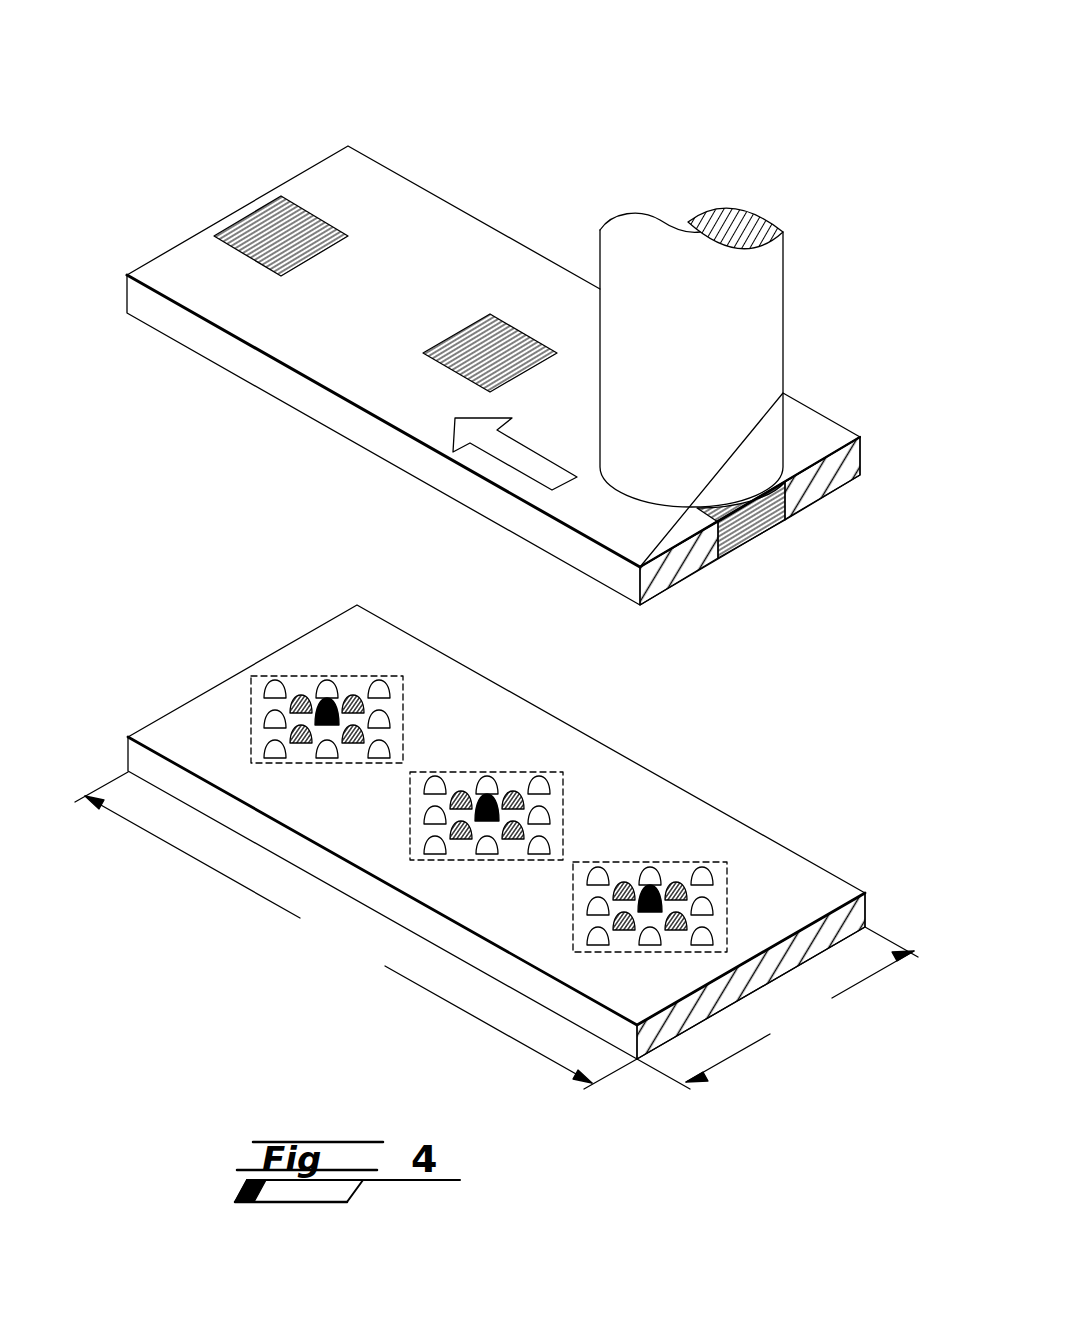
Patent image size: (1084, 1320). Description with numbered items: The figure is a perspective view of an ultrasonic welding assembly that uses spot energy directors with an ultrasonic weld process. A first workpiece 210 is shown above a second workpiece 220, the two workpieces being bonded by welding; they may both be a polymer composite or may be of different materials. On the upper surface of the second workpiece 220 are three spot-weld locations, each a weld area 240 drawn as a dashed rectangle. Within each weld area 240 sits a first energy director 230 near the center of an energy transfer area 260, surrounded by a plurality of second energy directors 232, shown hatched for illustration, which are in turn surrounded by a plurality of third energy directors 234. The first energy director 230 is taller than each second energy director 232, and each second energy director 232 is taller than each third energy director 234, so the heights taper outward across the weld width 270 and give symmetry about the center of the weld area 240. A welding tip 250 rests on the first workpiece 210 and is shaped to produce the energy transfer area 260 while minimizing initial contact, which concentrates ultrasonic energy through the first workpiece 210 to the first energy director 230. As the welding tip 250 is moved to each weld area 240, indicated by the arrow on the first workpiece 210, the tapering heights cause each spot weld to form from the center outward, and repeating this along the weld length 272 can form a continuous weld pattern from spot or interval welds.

The first workpiece 210 is at (861, 447).
The second workpiece 220 is at (866, 894).
The first energy director 230 is at (317, 702).
The second energy director 232 is at (350, 695).
The third energy director 234 is at (280, 679).
The weld area 240 is at (252, 720).
The welding tip 250 is at (773, 340).
The energy transfer area 260 is at (297, 208).
The weld width 270 is at (777, 1008).
The weld length 272 is at (356, 930).